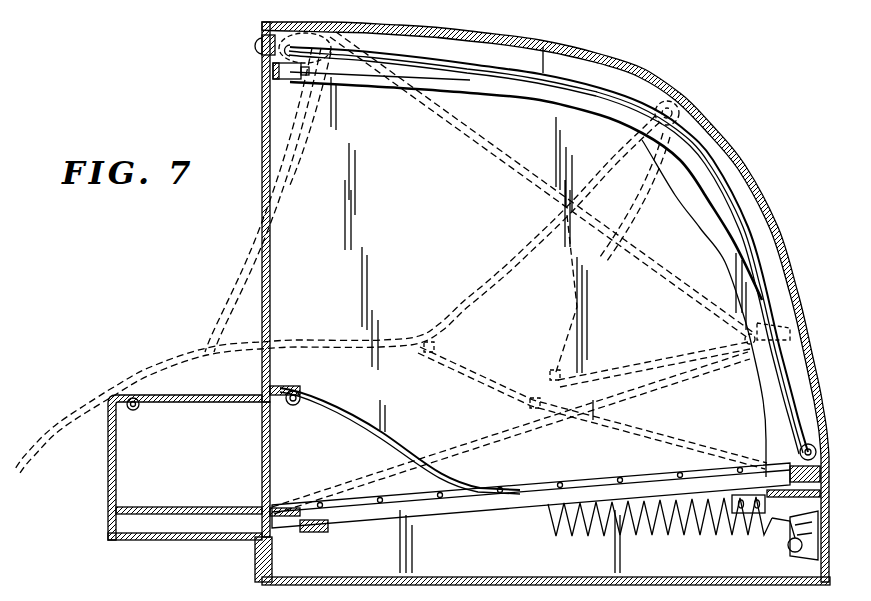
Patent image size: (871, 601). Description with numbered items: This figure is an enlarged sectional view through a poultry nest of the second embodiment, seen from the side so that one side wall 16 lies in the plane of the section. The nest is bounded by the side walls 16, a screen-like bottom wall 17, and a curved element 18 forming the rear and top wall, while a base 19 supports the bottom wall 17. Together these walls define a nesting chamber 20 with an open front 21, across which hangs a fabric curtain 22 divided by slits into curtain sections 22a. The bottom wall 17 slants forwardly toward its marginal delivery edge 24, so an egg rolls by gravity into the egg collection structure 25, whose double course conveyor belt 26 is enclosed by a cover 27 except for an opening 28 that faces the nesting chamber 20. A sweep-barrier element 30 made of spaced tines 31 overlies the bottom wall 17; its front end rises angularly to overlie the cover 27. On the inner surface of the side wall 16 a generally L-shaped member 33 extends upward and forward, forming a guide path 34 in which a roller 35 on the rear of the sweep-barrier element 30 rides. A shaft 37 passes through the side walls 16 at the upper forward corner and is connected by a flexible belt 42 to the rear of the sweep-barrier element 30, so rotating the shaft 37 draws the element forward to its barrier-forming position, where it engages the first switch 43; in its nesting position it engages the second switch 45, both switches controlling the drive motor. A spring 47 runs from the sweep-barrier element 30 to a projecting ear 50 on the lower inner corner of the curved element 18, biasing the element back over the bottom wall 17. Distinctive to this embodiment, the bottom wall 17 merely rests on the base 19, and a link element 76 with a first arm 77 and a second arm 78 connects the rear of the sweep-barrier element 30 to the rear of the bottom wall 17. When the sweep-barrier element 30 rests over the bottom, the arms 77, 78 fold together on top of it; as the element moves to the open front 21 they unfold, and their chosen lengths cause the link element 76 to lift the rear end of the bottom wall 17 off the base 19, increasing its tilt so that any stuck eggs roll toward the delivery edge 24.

The side wall 16 is at (659, 192).
The bottom wall 17 is at (598, 444).
The curved element 18 is at (658, 83).
The base 19 is at (313, 534).
The nesting chamber 20 is at (669, 217).
The open front 21 is at (267, 264).
The fabric curtain 22 is at (267, 224).
The curtain section 22a is at (265, 150).
The marginal delivery edge 24 is at (266, 512).
The egg collection structure 25 is at (106, 479).
The double course conveyor belt 26 is at (162, 520).
The cover 27 is at (188, 402).
The opening 28 is at (263, 449).
The sweep-barrier element 30 is at (289, 154).
The tine 31 is at (217, 297).
The L-shaped member 33 is at (607, 117).
The guide path 34 is at (557, 70).
The roller 35 is at (325, 30).
The shaft 37 is at (275, 66).
The flexible belt 42 is at (600, 88).
The first switch 43 is at (272, 79).
The second switch 45 is at (745, 515).
The spring 47 is at (339, 385).
The projecting ear 50 is at (800, 556).
The link element 76 is at (472, 158).
The first arm 77 is at (413, 110).
The second arm 78 is at (653, 272).